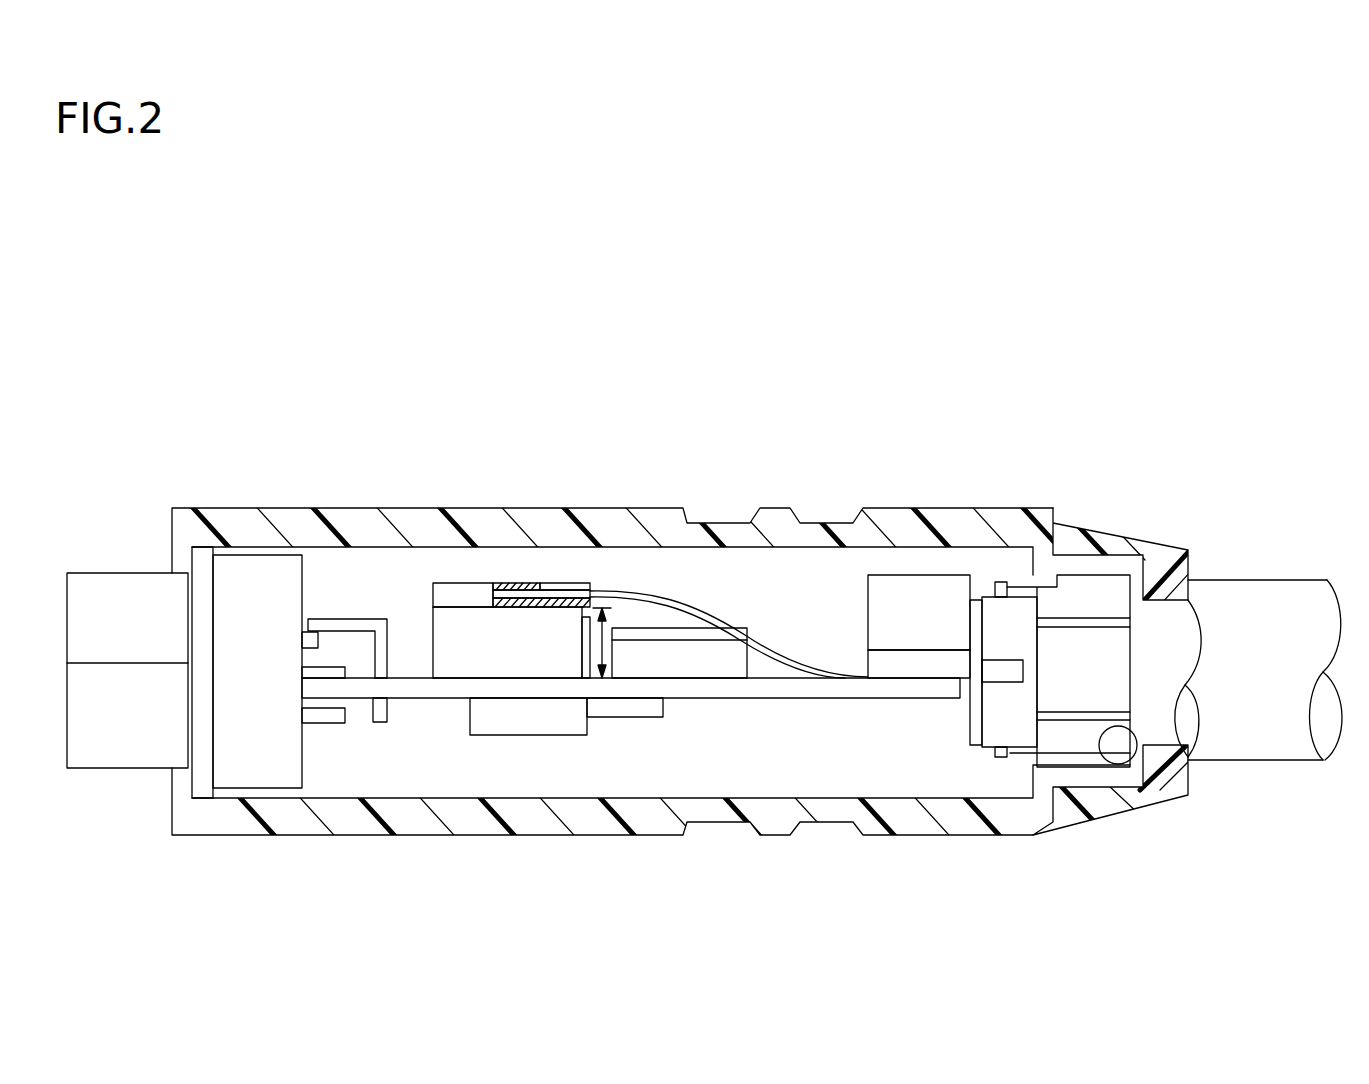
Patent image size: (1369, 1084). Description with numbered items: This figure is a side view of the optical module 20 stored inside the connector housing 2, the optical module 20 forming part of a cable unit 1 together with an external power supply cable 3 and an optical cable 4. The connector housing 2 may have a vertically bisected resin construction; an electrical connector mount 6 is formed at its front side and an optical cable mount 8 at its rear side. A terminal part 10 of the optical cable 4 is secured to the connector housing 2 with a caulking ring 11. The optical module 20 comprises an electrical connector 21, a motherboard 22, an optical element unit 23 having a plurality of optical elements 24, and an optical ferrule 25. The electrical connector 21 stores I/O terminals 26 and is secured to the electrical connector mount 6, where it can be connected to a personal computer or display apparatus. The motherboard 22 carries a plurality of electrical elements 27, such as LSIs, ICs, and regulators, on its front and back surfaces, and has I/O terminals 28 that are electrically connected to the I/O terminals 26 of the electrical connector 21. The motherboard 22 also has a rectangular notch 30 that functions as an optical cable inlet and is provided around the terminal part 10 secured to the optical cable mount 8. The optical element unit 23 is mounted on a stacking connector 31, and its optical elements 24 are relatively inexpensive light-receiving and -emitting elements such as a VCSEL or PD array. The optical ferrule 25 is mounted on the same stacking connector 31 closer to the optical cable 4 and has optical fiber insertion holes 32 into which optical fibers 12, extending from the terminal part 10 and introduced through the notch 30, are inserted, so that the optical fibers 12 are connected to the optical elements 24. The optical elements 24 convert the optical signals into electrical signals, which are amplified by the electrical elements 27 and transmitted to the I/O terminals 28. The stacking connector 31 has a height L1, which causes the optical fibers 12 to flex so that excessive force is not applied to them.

The cable unit 1 is at (834, 343).
The connector housing 2 is at (246, 508).
The external power supply cable 3 is at (1270, 580).
The optical cable 4 is at (1190, 776).
The electrical connector mount 6 is at (184, 567).
The optical cable mount 8 is at (1115, 765).
The terminal part 10 is at (922, 658).
The caulking ring 11 is at (1020, 757).
The optical fibers 12 is at (786, 656).
The optical module 20 is at (646, 573).
The electrical connector 21 is at (118, 573).
The motherboard 22 is at (748, 698).
The optical element unit 23 is at (495, 546).
The optical elements 24 is at (458, 600).
The optical ferrule 25 is at (511, 588).
The I/O terminals 26 is at (305, 647).
The electrical elements 27 is at (510, 735).
The I/O terminals 28 is at (343, 615).
The rectangular notch 30 is at (810, 680).
The stacking connector 31 is at (435, 645).
The optical fiber insertion holes 32 is at (527, 593).
The height L1 is at (648, 645).